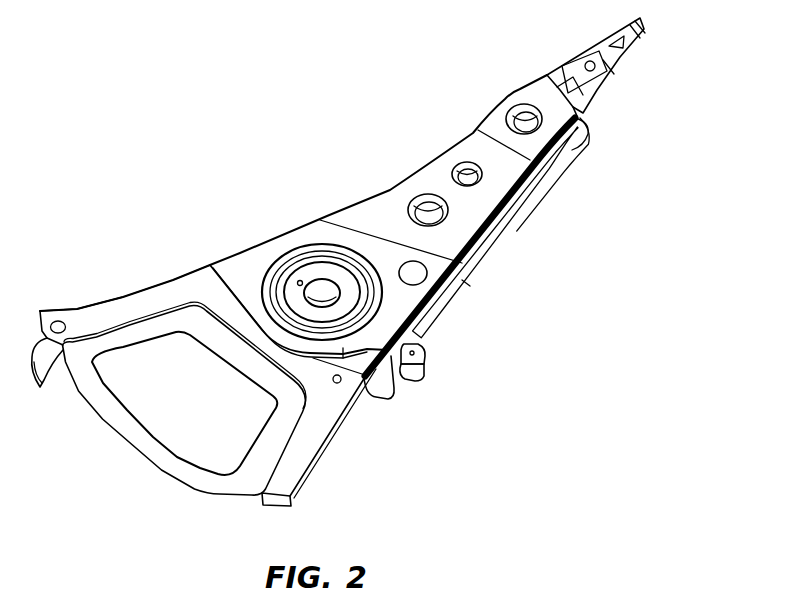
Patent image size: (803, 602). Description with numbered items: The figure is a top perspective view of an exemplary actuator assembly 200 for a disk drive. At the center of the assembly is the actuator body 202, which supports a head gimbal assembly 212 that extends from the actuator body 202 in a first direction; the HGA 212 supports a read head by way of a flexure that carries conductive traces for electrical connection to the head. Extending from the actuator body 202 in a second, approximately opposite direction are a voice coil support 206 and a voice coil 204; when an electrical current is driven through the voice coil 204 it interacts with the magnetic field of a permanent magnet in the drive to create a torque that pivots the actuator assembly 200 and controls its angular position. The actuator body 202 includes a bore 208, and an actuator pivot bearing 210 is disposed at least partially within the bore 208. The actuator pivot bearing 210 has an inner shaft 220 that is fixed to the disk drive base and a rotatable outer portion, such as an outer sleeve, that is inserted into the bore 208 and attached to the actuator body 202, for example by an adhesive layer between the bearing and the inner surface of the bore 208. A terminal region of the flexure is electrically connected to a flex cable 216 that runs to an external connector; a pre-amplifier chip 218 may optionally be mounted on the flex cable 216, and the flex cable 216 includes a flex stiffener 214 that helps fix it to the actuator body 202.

The actuator assembly 200 is at (258, 129).
The actuator body 202 is at (327, 236).
The voice coil 204 is at (133, 431).
The voice coil support 206 is at (293, 457).
The bore 208 is at (290, 246).
The actuator pivot bearing 210 is at (265, 266).
The head gimbal assembly 212 is at (562, 64).
The flex stiffener 214 is at (425, 360).
The flex cable 216 is at (450, 321).
The pre-amplifier chip 218 is at (410, 376).
The inner shaft 220 is at (323, 292).